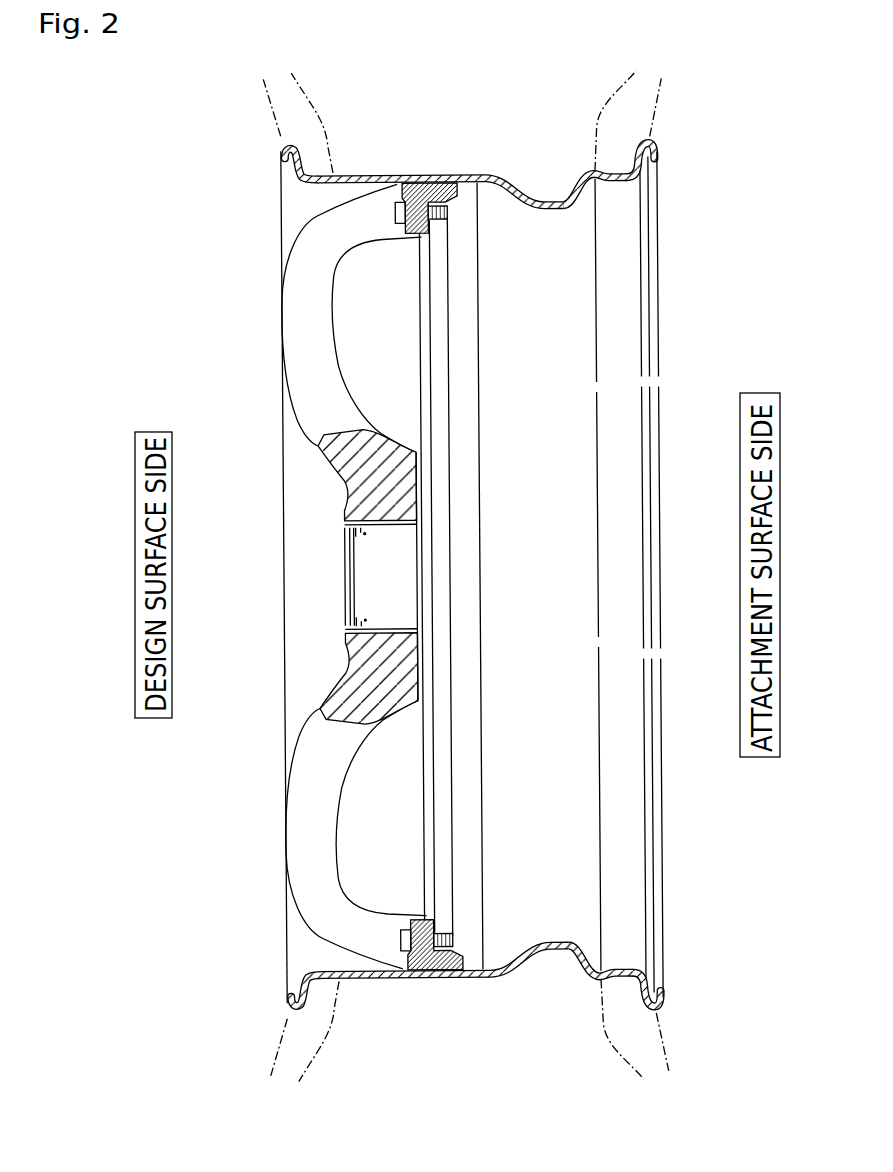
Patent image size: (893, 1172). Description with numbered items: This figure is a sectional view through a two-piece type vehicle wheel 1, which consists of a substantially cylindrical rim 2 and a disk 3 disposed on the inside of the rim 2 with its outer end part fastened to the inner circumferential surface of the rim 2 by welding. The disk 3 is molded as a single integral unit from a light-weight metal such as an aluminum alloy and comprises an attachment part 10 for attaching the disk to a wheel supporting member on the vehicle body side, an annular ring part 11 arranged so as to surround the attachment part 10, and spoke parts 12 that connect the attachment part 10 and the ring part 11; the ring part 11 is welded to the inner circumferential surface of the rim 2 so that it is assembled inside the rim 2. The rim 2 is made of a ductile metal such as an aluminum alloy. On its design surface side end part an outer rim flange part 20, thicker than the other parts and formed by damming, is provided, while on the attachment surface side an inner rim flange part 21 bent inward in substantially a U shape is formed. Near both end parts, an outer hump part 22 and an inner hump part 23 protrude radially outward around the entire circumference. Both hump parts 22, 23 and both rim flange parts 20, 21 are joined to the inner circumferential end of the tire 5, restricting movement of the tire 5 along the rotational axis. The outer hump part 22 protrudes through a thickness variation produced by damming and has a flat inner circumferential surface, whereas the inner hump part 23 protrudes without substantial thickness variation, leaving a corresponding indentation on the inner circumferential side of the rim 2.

The vehicle wheel 1 is at (730, 127).
The rim 2 is at (491, 170).
The disk 3 is at (287, 222).
The tire 5 is at (666, 92).
The attachment part 10 is at (346, 489).
The annular ring part 11 is at (414, 183).
The spoke parts 12 is at (292, 333).
The outer rim flange part 20 is at (283, 133).
The inner rim flange part 21 is at (664, 155).
The outer hump part 22 is at (334, 170).
The inner hump part 23 is at (590, 172).